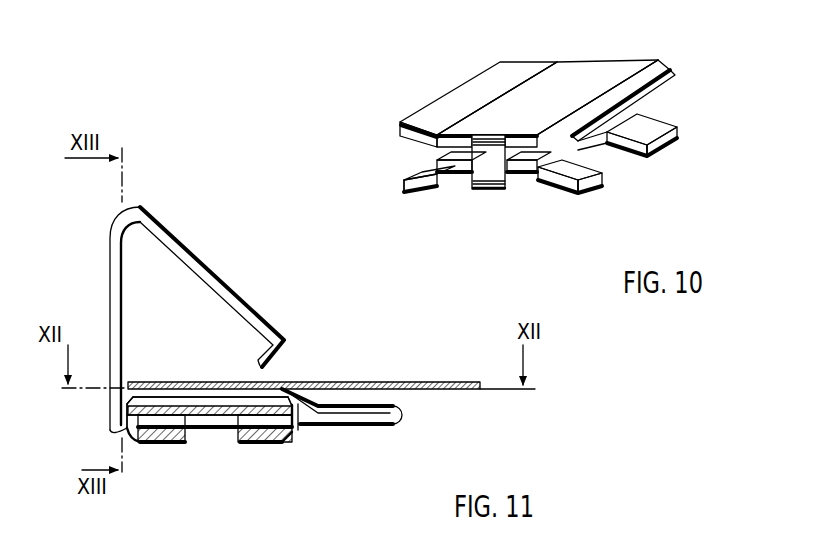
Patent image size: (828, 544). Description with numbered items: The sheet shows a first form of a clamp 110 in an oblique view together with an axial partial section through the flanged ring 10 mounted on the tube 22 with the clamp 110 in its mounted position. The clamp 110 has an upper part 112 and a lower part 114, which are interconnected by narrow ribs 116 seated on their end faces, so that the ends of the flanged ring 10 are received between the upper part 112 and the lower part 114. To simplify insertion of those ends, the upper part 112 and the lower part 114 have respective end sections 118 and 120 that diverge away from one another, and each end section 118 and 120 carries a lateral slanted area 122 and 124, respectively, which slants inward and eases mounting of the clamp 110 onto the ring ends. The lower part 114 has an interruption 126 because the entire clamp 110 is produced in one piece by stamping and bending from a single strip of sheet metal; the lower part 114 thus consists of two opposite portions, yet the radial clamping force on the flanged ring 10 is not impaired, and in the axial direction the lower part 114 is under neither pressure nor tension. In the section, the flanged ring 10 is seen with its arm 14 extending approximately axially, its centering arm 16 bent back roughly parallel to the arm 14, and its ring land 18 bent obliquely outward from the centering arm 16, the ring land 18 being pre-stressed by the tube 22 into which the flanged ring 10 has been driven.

In FIG. 11, the flanged ring 10 is at (110, 278).
In FIG. 11, the arm 14 is at (355, 421).
In FIG. 11, the centering arm 16 is at (378, 408).
In FIG. 11, the ring land 18 is at (305, 400).
In FIG. 11, the tube 22 is at (350, 384).
In FIG. 10, the clamp 110 is at (540, 129).
In FIG. 11, the clamp 110 is at (125, 433).
In FIG. 10, the upper part 112 is at (586, 76).
In FIG. 11, the upper part 112 is at (180, 410).
In FIG. 10, the lower part 114 is at (606, 141).
In FIG. 11, the lower part 114 is at (178, 440).
In FIG. 10, the narrow ribs 116 is at (488, 172).
In FIG. 11, the narrow ribs 116 is at (124, 426).
In FIG. 10, the end section of upper part 118 is at (478, 92).
In FIG. 11, the end section of upper part 118 is at (212, 397).
In FIG. 10, the end section of lower part 120 is at (425, 170).
In FIG. 11, the end section of lower part 120 is at (155, 447).
In FIG. 10, the lateral slanted area 122 is at (537, 61).
In FIG. 11, the lateral slanted area 122 is at (134, 395).
In FIG. 10, the lateral slanted area 124 is at (414, 192).
In FIG. 11, the lateral slanted area 124 is at (140, 446).
In FIG. 10, the interruption 126 is at (640, 143).
In FIG. 11, the interruption 126 is at (197, 432).